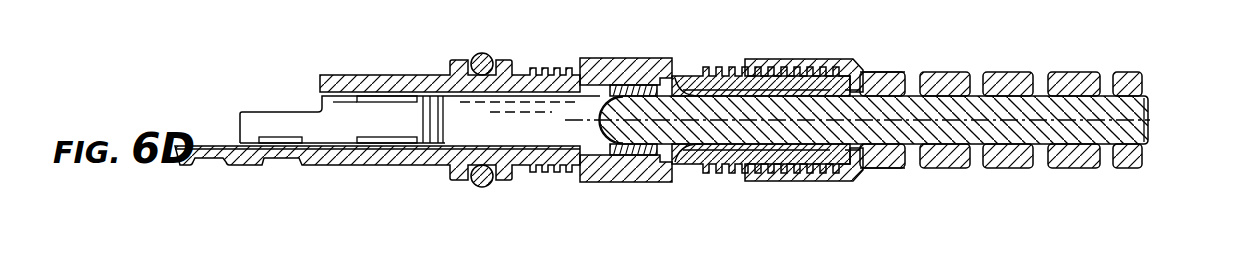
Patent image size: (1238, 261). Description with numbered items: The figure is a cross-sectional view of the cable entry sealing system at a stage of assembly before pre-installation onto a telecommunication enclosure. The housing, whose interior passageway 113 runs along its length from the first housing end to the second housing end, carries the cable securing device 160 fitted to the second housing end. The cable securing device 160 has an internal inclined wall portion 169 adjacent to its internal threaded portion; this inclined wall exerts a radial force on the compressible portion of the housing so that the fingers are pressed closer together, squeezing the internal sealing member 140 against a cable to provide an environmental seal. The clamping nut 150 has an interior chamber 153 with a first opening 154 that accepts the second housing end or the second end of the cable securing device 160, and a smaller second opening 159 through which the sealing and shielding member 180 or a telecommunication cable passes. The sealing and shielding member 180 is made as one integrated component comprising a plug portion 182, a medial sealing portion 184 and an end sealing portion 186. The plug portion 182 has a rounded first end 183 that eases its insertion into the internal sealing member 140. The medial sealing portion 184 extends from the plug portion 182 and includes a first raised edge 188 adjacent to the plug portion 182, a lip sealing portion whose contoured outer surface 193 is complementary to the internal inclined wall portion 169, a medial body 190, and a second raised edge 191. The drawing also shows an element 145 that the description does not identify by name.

The interior passageway 113 is at (332, 108).
The O-ring 145 is at (476, 55).
The internal inclined wall portion 169 is at (682, 84).
The contoured outer surface 193 is at (690, 96).
The first opening 154 is at (740, 70).
The second opening 159 is at (1146, 93).
The sealing and shielding member 180 is at (1142, 130).
The end sealing portion 186 is at (1102, 133).
The interior chamber 153 is at (1060, 146).
The clamping nut 150 is at (888, 167).
The second raised edge 191 is at (845, 153).
The medial body 190 is at (783, 140).
The cable securing device 160 is at (732, 170).
The medial sealing portion 184 is at (722, 135).
The first raised edge 188 is at (685, 150).
The internal sealing member 140 is at (643, 152).
The plug portion 182 is at (622, 140).
The rounded first end 183 is at (600, 128).